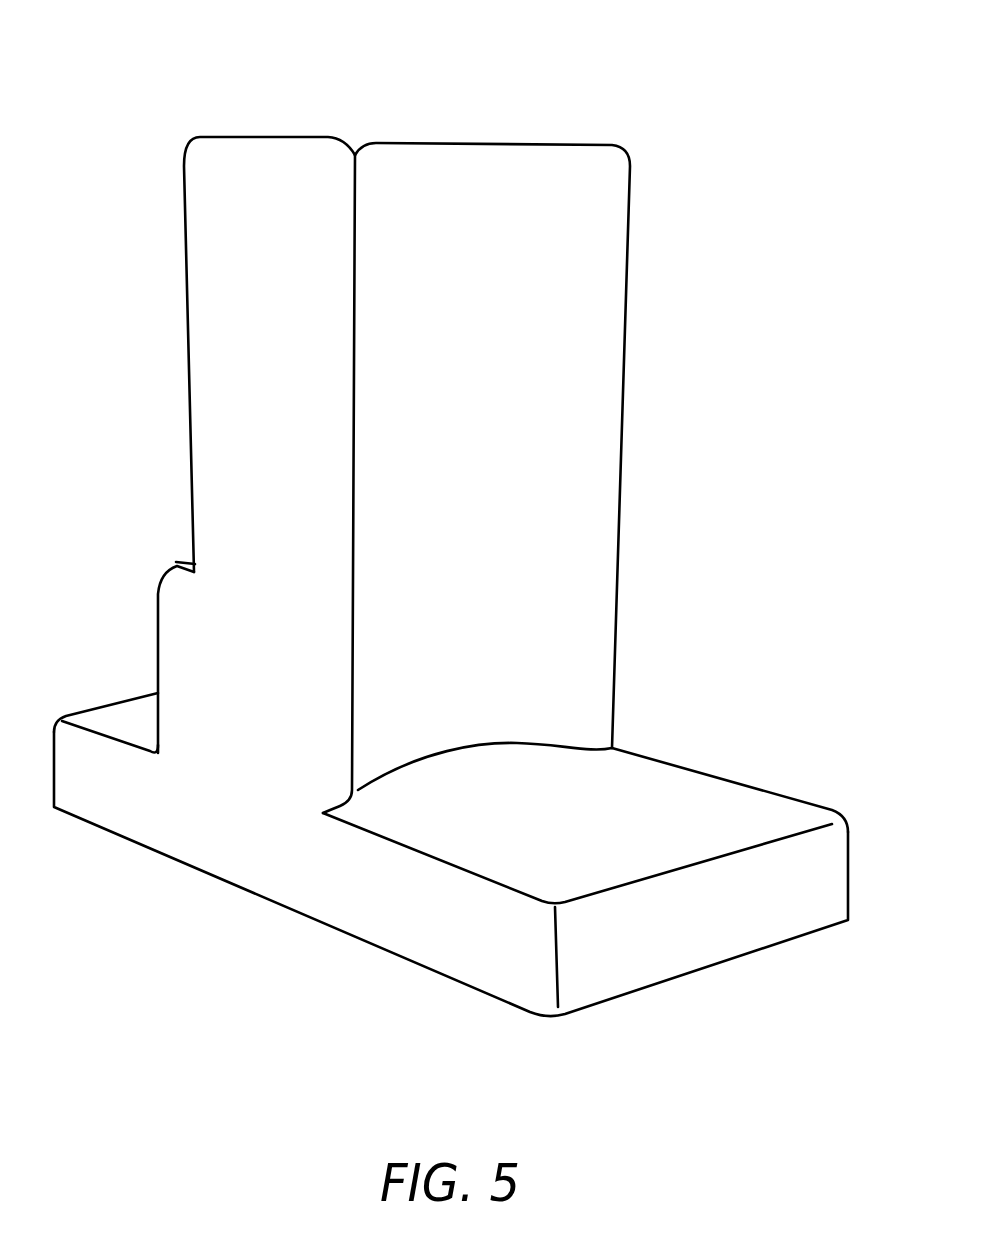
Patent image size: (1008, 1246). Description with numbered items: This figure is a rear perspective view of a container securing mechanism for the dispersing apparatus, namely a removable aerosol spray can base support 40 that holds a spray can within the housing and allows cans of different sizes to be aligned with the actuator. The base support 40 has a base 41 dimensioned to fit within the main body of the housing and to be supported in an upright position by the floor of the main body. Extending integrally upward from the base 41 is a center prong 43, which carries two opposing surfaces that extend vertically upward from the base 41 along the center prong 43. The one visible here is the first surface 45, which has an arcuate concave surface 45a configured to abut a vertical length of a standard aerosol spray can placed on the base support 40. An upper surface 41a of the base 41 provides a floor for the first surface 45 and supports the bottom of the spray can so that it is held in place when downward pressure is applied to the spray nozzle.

The base support 40 is at (689, 300).
The base 41 is at (668, 952).
The upper surface 41a is at (697, 797).
The center prong 43 is at (326, 137).
The first surface 45 is at (616, 653).
The arcuate concave surface 45a is at (617, 513).